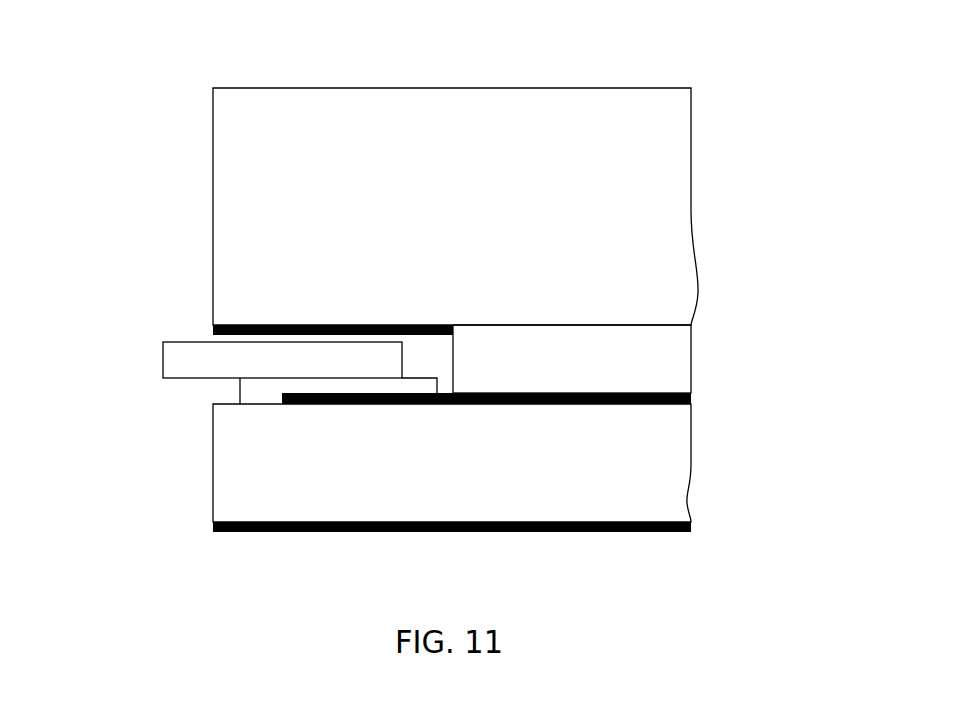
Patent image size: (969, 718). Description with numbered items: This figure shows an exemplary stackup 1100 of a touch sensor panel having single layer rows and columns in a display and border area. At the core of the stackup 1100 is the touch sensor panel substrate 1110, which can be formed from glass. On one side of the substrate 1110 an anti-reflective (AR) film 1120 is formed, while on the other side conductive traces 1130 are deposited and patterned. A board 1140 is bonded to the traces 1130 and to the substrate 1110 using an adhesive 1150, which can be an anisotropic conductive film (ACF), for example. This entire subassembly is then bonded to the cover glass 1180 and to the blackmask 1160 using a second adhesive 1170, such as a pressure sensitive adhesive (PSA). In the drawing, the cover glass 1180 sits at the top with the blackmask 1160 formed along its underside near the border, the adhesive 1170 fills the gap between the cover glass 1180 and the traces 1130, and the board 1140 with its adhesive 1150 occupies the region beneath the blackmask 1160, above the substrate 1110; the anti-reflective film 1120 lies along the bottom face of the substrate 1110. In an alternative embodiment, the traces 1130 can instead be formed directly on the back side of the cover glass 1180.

The stackup 1100 is at (274, 44).
The touch sensor panel substrate 1110 is at (452, 463).
The anti-reflective film 1120 is at (213, 530).
The conductive traces 1130 is at (692, 400).
The board 1140 is at (282, 360).
The adhesive 1150 is at (257, 386).
The blackmask 1160 is at (213, 330).
The adhesive 1170 is at (572, 359).
The cover glass 1180 is at (455, 206).